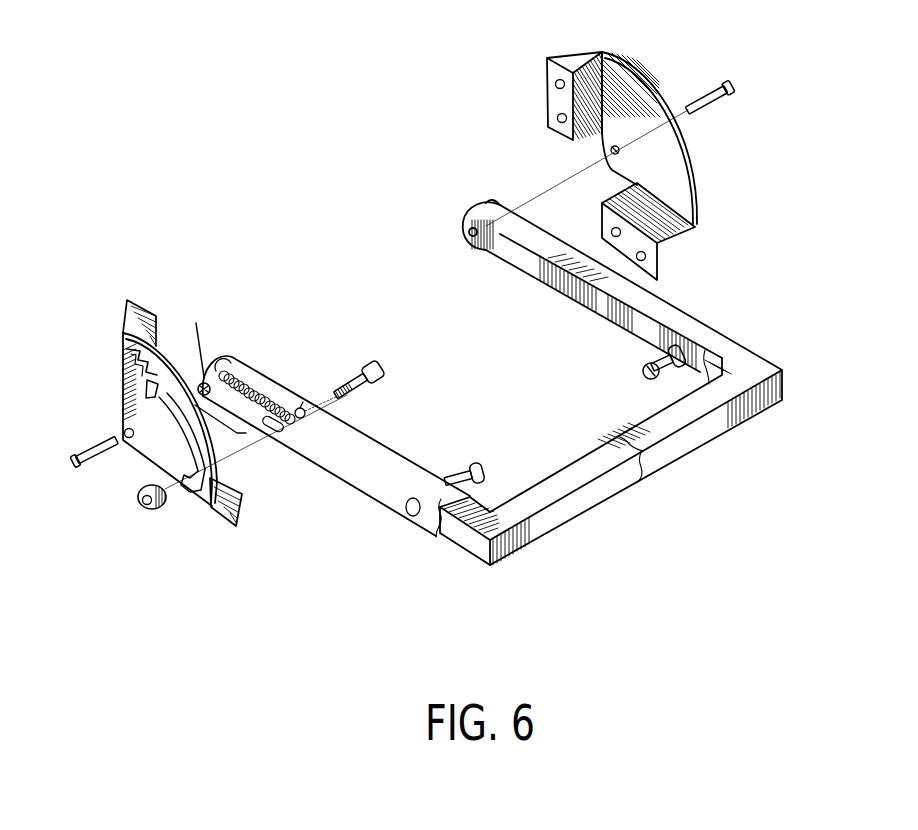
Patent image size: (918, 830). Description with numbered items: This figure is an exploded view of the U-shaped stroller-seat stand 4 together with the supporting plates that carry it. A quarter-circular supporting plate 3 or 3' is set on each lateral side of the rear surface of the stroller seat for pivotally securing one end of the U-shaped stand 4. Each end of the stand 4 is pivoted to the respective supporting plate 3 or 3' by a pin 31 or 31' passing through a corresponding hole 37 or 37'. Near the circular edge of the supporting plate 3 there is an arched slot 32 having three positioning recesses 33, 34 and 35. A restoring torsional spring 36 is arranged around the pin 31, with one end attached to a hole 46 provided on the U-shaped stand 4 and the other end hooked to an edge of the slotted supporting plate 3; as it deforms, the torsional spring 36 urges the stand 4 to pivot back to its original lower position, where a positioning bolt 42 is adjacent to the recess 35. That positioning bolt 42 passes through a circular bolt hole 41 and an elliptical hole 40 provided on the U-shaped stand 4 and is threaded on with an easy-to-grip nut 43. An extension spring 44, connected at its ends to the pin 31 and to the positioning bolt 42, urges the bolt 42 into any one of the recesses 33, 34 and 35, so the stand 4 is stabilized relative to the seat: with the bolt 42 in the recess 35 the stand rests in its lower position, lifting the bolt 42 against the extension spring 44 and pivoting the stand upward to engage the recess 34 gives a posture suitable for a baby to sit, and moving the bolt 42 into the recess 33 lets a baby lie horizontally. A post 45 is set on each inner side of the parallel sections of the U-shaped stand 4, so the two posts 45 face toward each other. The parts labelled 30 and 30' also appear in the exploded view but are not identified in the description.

The quarter-circular supporting plate 3 is at (242, 508).
The quarter-circular supporting plate 3' is at (574, 77).
The U-shaped stroller-seat stand 4 is at (477, 547).
The quarter-disc bracket plate 30 is at (170, 450).
The quarter-disc bracket plate 30' is at (669, 166).
The pin 31 is at (94, 473).
The pin 31' is at (710, 80).
The arched slot 32 is at (122, 346).
The positioning recess 33 is at (127, 375).
The positioning recess 34 is at (150, 396).
The positioning recess 35 is at (211, 474).
The restoring torsional spring 36 is at (196, 323).
The hole 37 is at (124, 476).
The hole 37' is at (597, 176).
The elliptical hole 40 is at (280, 443).
The circular bolt hole 41 is at (302, 407).
The positioning bolt 42 is at (357, 370).
The easy-to-grip nut 43 is at (148, 510).
The extension spring 44 is at (258, 412).
The post 45 is at (648, 358).
The hole 46 is at (250, 398).